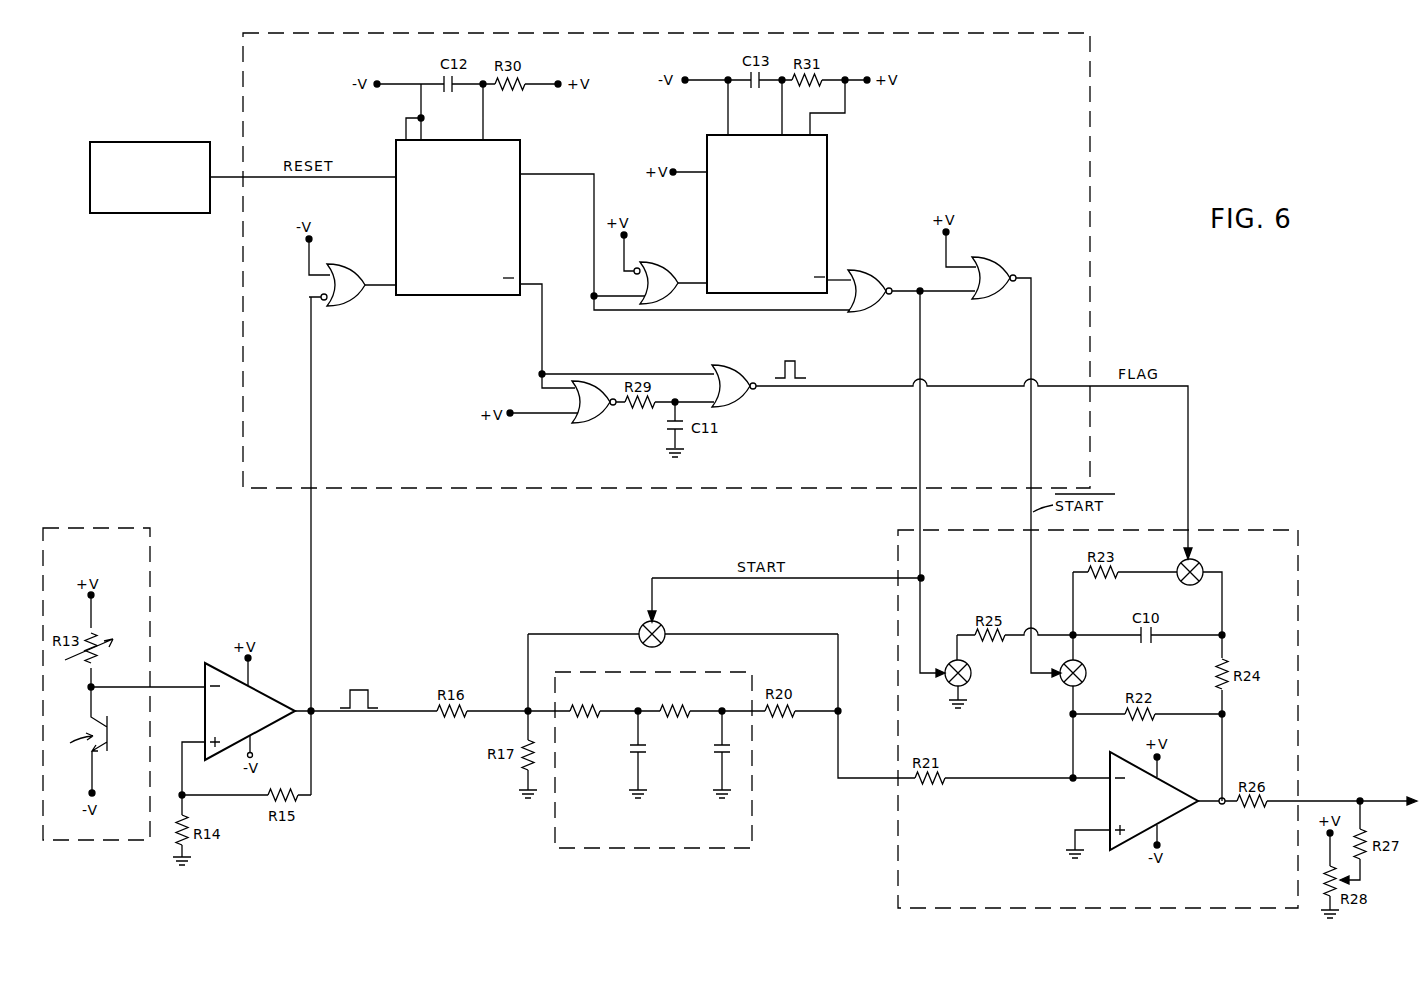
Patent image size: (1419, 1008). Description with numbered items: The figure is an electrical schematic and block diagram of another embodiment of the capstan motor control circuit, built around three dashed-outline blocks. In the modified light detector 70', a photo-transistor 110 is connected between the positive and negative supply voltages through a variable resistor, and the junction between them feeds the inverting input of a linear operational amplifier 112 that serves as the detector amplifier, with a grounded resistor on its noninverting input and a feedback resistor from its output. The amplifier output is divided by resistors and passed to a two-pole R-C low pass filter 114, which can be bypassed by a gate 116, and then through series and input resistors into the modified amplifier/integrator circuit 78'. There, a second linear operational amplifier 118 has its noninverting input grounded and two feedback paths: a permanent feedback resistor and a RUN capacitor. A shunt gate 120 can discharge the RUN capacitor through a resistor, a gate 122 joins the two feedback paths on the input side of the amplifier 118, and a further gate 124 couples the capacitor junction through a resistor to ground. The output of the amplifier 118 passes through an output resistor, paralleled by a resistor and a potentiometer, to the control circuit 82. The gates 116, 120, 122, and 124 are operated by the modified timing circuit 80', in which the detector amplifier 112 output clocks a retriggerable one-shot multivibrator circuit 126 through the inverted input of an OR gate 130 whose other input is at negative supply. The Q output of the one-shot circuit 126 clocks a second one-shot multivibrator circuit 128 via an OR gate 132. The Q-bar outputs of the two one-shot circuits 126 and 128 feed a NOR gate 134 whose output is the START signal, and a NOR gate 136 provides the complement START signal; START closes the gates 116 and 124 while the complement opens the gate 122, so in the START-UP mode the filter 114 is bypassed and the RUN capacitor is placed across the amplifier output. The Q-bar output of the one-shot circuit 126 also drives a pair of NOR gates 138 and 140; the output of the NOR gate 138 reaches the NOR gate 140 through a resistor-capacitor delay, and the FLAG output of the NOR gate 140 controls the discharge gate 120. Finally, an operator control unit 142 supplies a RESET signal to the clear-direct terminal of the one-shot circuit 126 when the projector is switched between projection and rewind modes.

The operator control unit 142 is at (168, 142).
The retriggerable one-shot multivibrator circuit 126 is at (458, 289).
The one-shot multivibrator circuit 128 is at (818, 197).
The OR gate 130 is at (356, 298).
The OR gate 132 is at (651, 272).
The NOR gate 134 is at (862, 272).
The NOR gate 136 is at (990, 270).
The NOR gate 138 is at (591, 419).
The NOR gate 140 is at (735, 398).
The gate 116 is at (665, 628).
The shunt gate 120 is at (1200, 562).
The gate 122 is at (1087, 672).
The gate 124 is at (972, 682).
The photo-transistor 110 is at (78, 740).
The linear operational amplifier 112 is at (225, 705).
The two-pole R-C low pass filter 114 is at (653, 760).
The linear operational amplifier 118 is at (1113, 796).
The modified light detector 70' is at (96, 718).
The modified timing circuit 80' is at (666, 260).
The modified amplifier/integrator circuit 78' is at (1098, 719).
The control circuit 82 is at (1381, 762).